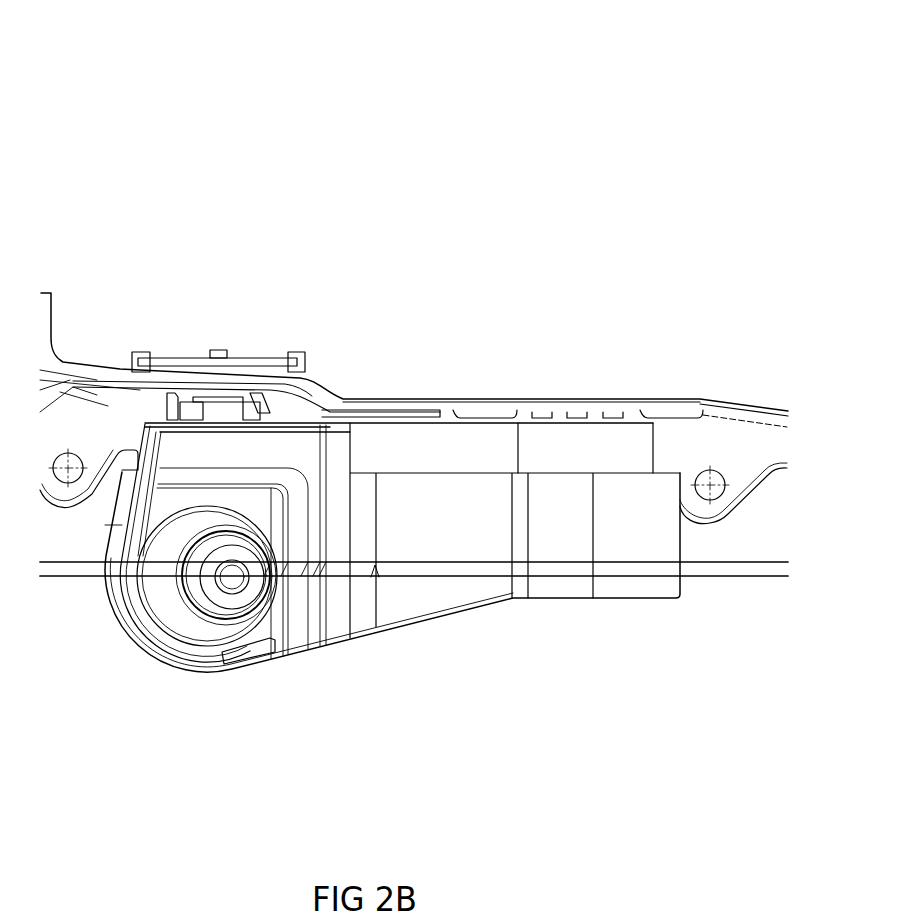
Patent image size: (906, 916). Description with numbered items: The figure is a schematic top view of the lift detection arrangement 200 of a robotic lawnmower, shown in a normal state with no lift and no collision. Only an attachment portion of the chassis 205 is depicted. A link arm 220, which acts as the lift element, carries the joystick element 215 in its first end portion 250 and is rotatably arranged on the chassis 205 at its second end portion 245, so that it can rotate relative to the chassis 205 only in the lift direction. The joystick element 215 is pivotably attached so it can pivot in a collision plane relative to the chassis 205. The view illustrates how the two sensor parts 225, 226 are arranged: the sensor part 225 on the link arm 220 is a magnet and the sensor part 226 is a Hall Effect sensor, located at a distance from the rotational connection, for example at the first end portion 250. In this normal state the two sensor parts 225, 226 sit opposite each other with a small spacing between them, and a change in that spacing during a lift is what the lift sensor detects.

The lift detection arrangement 200 is at (235, 92).
The chassis 205 is at (575, 397).
The joystick element 215 is at (182, 583).
The link arm 220 is at (425, 619).
The sensor part 225 is at (247, 415).
The sensor part 226 is at (211, 350).
The second end portion 245 is at (585, 473).
The first end portion 250 is at (172, 642).